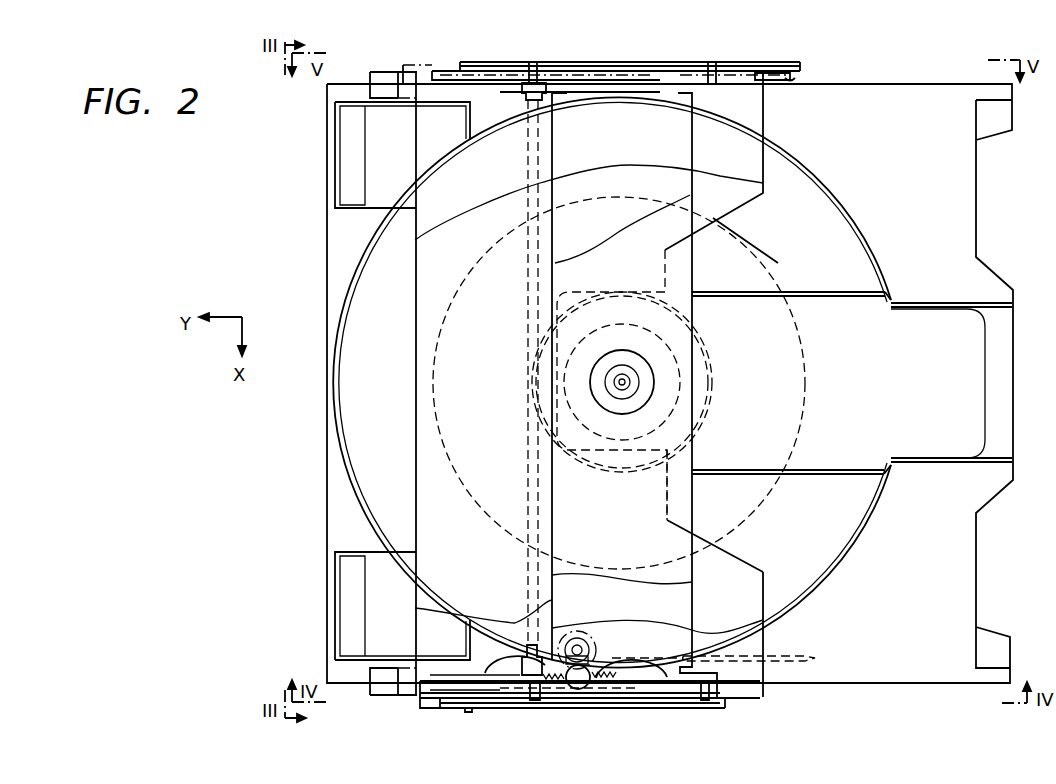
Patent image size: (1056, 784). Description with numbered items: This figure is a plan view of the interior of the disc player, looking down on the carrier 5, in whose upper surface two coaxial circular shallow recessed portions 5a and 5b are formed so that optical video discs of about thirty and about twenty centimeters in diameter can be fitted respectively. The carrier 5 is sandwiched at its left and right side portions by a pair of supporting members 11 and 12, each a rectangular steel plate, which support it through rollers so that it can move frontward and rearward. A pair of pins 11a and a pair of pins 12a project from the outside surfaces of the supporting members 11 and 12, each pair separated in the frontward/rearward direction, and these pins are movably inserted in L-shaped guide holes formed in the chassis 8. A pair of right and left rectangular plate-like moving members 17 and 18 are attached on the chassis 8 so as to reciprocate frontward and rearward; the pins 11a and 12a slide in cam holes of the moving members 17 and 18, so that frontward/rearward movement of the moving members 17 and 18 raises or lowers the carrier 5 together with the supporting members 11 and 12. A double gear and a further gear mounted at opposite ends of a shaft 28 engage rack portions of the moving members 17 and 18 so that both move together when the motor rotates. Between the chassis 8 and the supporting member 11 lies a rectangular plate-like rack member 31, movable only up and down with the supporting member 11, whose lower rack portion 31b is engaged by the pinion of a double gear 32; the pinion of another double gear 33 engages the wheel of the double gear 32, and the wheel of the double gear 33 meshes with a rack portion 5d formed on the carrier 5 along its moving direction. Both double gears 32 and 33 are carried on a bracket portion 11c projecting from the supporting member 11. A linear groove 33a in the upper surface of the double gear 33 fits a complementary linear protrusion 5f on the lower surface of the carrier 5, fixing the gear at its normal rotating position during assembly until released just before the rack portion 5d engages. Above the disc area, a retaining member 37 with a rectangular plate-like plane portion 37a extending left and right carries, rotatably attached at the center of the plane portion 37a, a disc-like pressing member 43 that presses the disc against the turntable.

The carrier 5 is at (321, 242).
The recessed portion 5a is at (852, 513).
The recessed portion 5b is at (737, 512).
The rack portion 5d is at (528, 648).
The linear protrusion 5f is at (797, 662).
The chassis 8 is at (430, 486).
The supporting member 11 is at (757, 700).
The pins 11a is at (533, 703).
The bracket portion 11c is at (686, 638).
The supporting member 12 is at (463, 61).
The pins 12a is at (532, 60).
The moving member 17 is at (720, 708).
The moving member 18 is at (775, 68).
The shaft 28 is at (531, 292).
The rack member 31 is at (430, 690).
The rack portion 31b is at (463, 693).
The double gear 32 is at (602, 668).
The double gear 33 is at (588, 636).
The linear groove 33a is at (594, 652).
The retaining member 37 is at (704, 323).
The plane portion 37a is at (678, 342).
The pressing member 43 is at (686, 380).